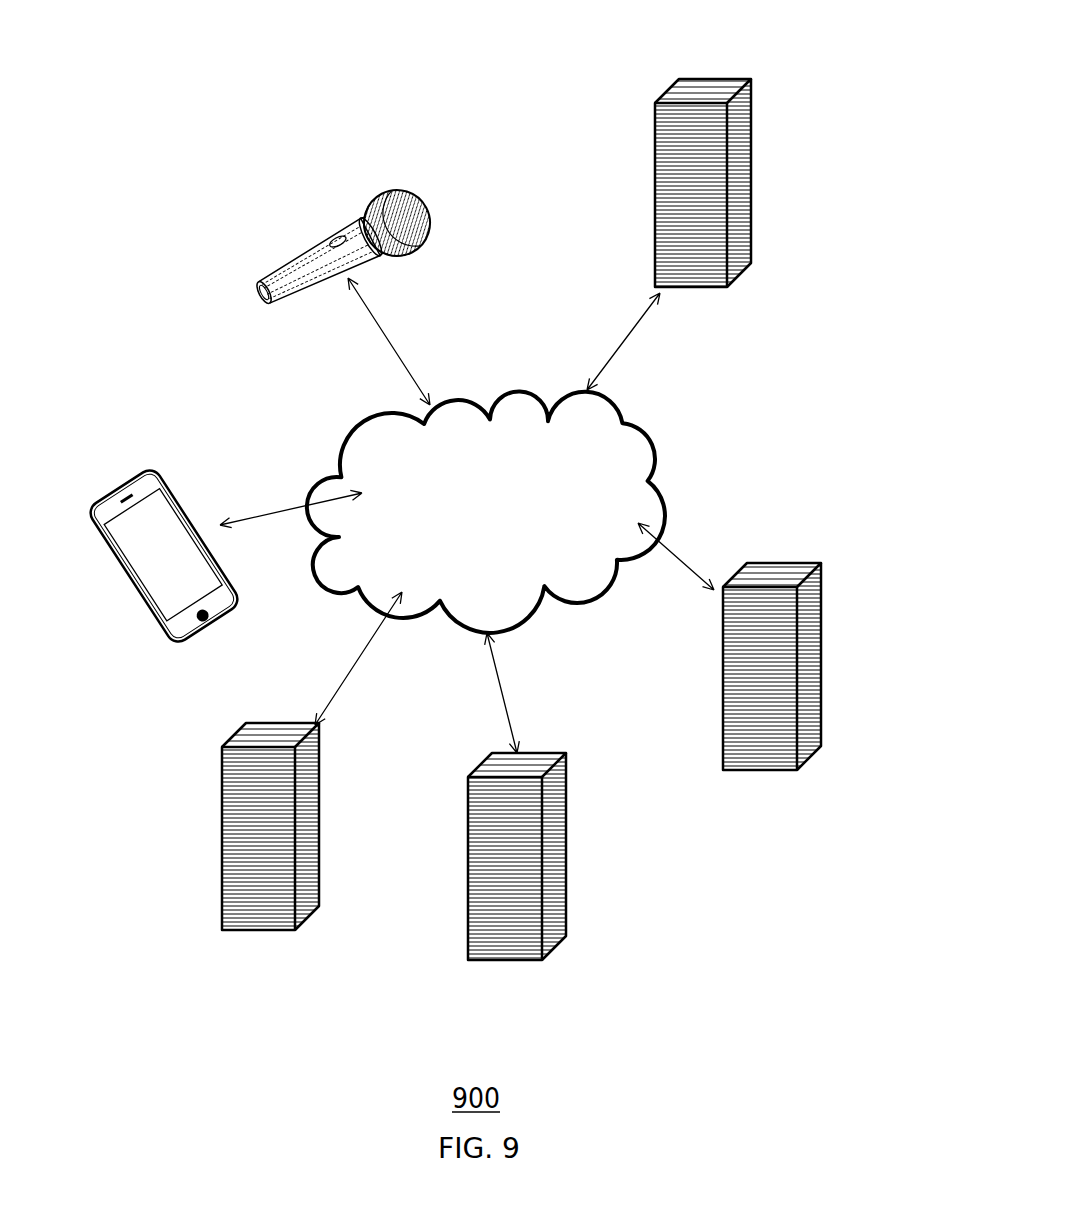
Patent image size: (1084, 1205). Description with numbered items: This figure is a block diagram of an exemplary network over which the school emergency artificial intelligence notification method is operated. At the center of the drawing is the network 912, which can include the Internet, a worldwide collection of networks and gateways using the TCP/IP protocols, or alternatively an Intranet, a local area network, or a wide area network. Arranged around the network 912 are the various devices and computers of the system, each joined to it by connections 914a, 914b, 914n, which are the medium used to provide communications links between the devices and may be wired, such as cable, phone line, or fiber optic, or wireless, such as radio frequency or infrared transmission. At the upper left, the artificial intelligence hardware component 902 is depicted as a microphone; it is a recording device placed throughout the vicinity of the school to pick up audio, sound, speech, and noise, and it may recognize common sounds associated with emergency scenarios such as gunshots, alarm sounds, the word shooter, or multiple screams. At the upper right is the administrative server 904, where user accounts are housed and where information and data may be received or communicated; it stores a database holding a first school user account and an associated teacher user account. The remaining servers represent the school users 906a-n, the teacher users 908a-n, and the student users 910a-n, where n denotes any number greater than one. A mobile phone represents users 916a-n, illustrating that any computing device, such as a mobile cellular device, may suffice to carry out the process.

The artificial intelligence hardware component 902 is at (360, 222).
The administrative server 904 is at (737, 200).
The school users 906a-n is at (800, 697).
The teacher users 908a-n is at (553, 903).
The student users 910a-n is at (233, 822).
The network 912 is at (486, 511).
The connection 914a is at (383, 327).
The connection 914b is at (613, 360).
The connection 914n is at (505, 713).
The mobile cellular device users 916a-n is at (158, 592).